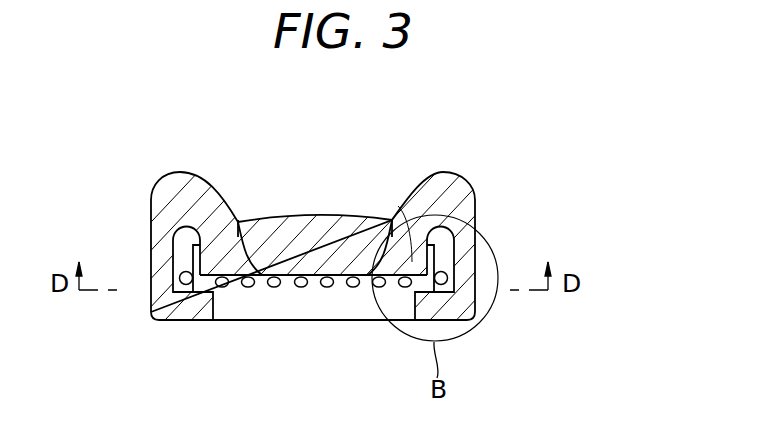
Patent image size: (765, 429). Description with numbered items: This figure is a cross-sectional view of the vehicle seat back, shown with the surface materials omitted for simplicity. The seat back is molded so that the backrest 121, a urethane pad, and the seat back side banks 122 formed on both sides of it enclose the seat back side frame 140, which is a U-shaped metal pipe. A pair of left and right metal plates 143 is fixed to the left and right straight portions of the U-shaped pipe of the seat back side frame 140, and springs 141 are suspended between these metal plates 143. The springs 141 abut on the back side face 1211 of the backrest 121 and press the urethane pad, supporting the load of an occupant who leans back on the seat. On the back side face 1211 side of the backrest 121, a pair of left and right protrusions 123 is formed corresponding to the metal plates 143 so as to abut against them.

The backrest 121 is at (310, 215).
The back side face 1211 is at (318, 281).
The seat back side bank 122 is at (450, 172).
The protrusion 123 is at (416, 265).
The seat back side frame 140 is at (468, 272).
The spring 141 is at (340, 288).
The metal plate 143 is at (460, 242).